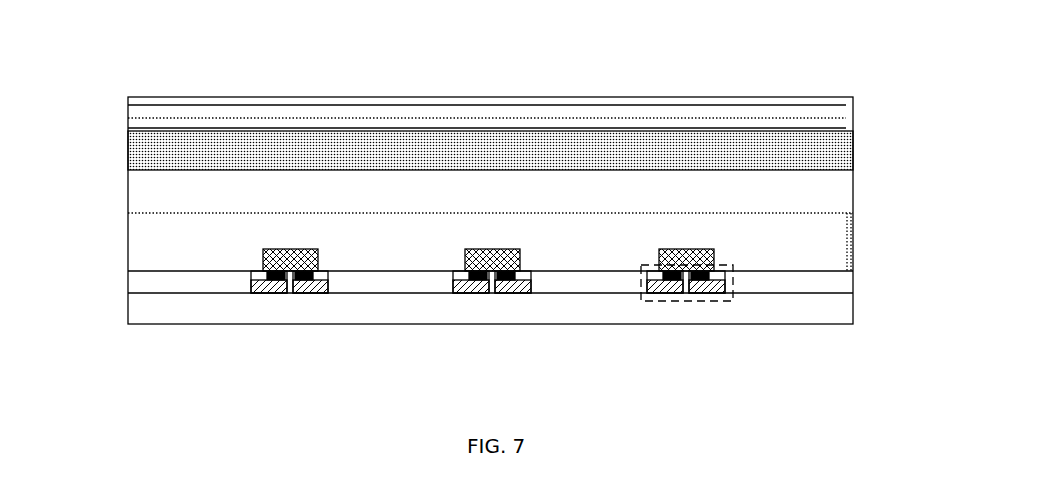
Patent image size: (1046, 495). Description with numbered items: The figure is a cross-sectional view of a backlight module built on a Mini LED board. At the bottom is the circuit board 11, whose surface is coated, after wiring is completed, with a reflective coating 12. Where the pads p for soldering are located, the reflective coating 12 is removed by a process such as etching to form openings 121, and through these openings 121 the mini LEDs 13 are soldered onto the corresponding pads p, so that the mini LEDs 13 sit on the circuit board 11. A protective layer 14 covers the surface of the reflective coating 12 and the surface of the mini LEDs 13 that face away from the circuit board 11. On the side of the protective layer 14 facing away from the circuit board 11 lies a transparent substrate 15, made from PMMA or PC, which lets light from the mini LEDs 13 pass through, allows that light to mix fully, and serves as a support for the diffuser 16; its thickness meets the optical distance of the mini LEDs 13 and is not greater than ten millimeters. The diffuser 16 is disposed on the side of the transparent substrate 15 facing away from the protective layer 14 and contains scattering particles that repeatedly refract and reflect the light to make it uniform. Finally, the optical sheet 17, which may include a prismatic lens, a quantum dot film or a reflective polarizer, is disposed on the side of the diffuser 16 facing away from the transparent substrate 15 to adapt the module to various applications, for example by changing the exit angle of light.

The circuit board 11 is at (751, 316).
The reflective coating 12 is at (490, 329).
The mini LEDs 13 is at (241, 318).
The protective layer 14 is at (895, 228).
The transparent substrate 15 is at (451, 177).
The diffuser 16 is at (536, 132).
The optical sheet 17 is at (448, 96).
The openings 121 is at (754, 316).
The pads p is at (523, 318).